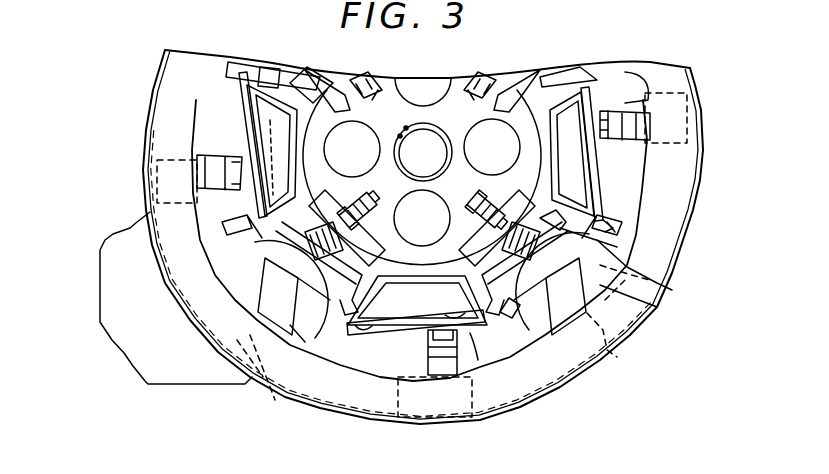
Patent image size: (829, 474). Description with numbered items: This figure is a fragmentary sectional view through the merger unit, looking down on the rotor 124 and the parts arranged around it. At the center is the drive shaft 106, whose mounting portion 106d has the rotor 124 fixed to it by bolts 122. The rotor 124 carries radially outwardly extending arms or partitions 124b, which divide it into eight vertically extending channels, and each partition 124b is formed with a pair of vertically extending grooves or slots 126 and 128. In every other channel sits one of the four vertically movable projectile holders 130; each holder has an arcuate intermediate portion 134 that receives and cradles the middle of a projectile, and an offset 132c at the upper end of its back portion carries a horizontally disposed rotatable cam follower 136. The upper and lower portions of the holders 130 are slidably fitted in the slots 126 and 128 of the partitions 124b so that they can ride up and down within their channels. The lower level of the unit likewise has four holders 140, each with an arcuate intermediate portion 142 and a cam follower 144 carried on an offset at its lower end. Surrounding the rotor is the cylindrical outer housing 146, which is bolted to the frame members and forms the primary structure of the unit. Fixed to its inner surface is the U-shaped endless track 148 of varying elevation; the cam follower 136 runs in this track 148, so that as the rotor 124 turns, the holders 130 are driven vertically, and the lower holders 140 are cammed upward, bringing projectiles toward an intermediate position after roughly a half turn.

The drive shaft 106 is at (432, 142).
The mounting portion 106d is at (503, 110).
The bolts 122 is at (380, 190).
The rotor 124 is at (330, 110).
The partitions 124b is at (608, 224).
The slot 126 is at (600, 207).
The slot 128 is at (584, 88).
The projectile holders 130 is at (240, 113).
The offset 132c is at (233, 158).
The arcuate intermediate portion 134 is at (648, 70).
The cam follower 136 is at (150, 182).
The holders 140 is at (657, 307).
The arcuate intermediate portion 142 is at (617, 247).
The cam follower 144 is at (613, 357).
The cylindrical outer housing 146 is at (680, 257).
The endless track 148 is at (650, 280).